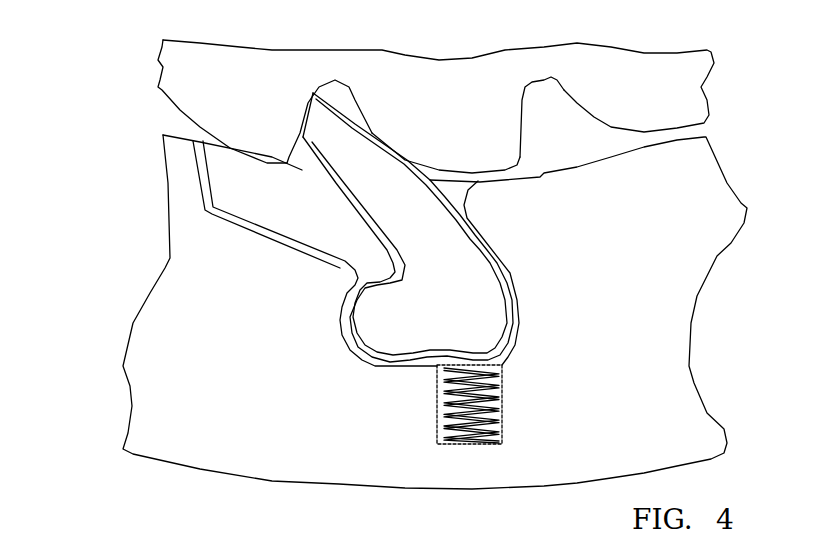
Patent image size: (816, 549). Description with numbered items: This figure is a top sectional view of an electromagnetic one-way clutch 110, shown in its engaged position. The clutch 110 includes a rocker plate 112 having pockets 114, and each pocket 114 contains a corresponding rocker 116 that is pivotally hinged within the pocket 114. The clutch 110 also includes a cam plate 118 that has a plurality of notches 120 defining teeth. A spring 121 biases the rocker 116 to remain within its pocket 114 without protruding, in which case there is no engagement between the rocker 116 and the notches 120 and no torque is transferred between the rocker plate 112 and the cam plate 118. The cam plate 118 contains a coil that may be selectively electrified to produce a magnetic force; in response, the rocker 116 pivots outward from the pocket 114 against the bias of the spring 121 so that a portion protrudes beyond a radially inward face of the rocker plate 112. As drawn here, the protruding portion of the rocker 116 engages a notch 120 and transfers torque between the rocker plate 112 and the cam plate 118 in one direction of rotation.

The electromagnetic one-way clutch 110 is at (110, 66).
The rocker plate 112 is at (192, 328).
The pocket 114 is at (347, 335).
The rocker 116 is at (482, 291).
The cam plate 118 is at (258, 107).
The notch 120 is at (334, 80).
The spring 121 is at (489, 413).